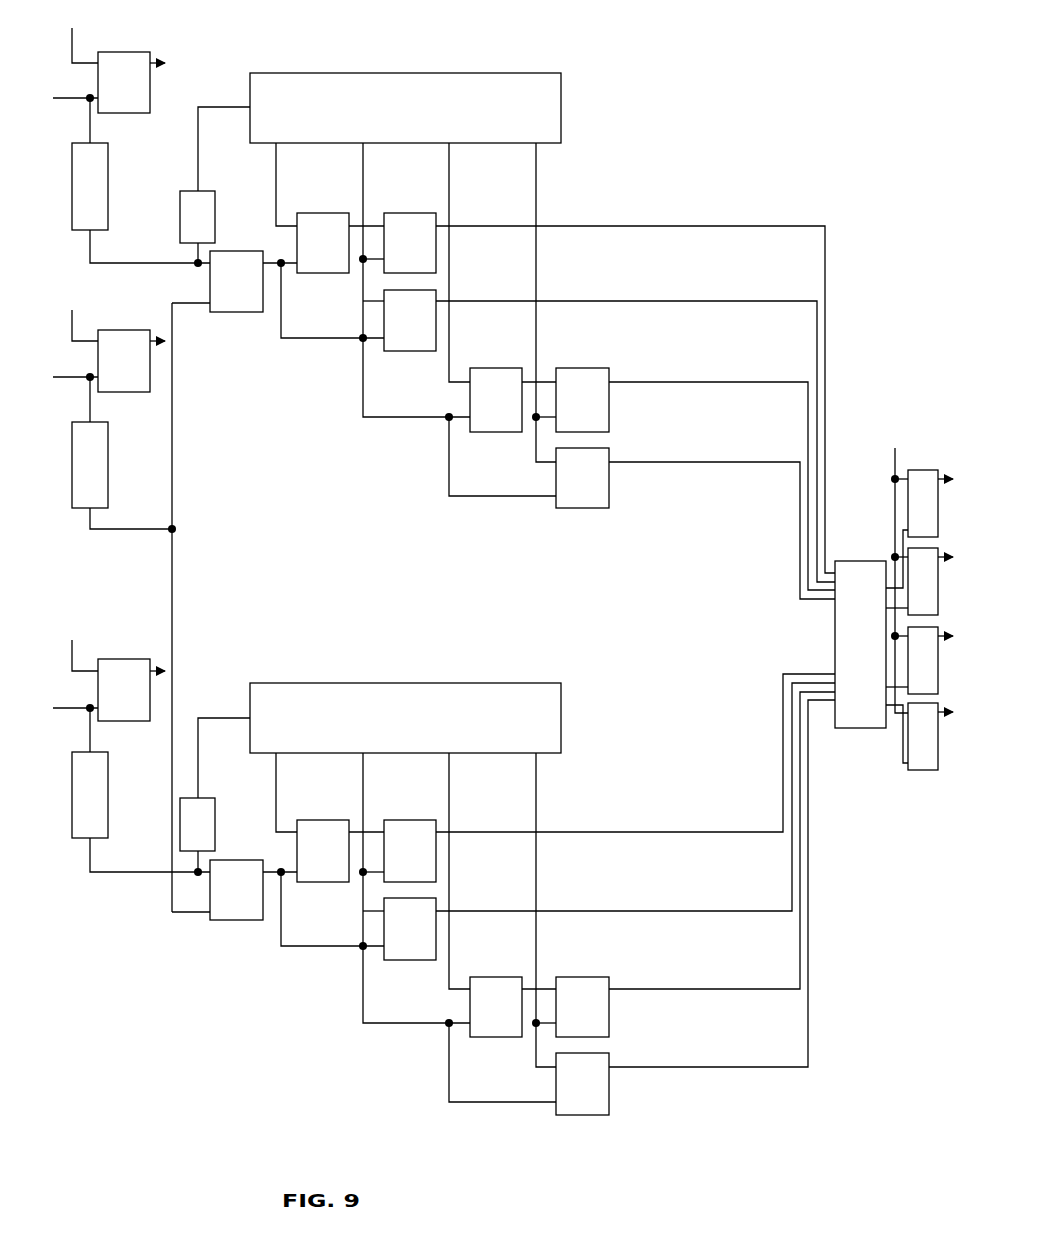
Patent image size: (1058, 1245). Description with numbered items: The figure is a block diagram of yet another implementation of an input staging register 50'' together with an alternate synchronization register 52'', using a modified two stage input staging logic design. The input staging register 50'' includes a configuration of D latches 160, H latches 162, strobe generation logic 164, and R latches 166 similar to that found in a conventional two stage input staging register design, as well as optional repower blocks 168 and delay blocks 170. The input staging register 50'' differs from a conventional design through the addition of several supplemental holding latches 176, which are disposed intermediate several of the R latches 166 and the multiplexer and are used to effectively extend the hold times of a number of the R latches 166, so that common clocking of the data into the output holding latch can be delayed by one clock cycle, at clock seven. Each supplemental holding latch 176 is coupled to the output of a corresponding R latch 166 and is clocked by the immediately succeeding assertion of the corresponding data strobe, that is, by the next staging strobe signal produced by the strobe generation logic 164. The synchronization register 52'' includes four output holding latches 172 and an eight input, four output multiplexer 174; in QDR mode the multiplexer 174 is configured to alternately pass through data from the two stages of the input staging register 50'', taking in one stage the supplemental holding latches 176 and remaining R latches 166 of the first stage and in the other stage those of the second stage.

The input staging register 50'' is at (461, 562).
The synchronization register 52'' is at (895, 570).
The D latches 160 is at (122, 52).
The H latches 162 is at (223, 312).
The strobe generation logic 164 is at (474, 73).
The R latches 166 is at (311, 273).
The repower blocks 168 is at (108, 200).
The delay blocks 170 is at (180, 233).
The H3 latches 172 is at (918, 470).
The M1 multiplexer 174 is at (848, 561).
The supplemental holding latches 176 is at (393, 213).